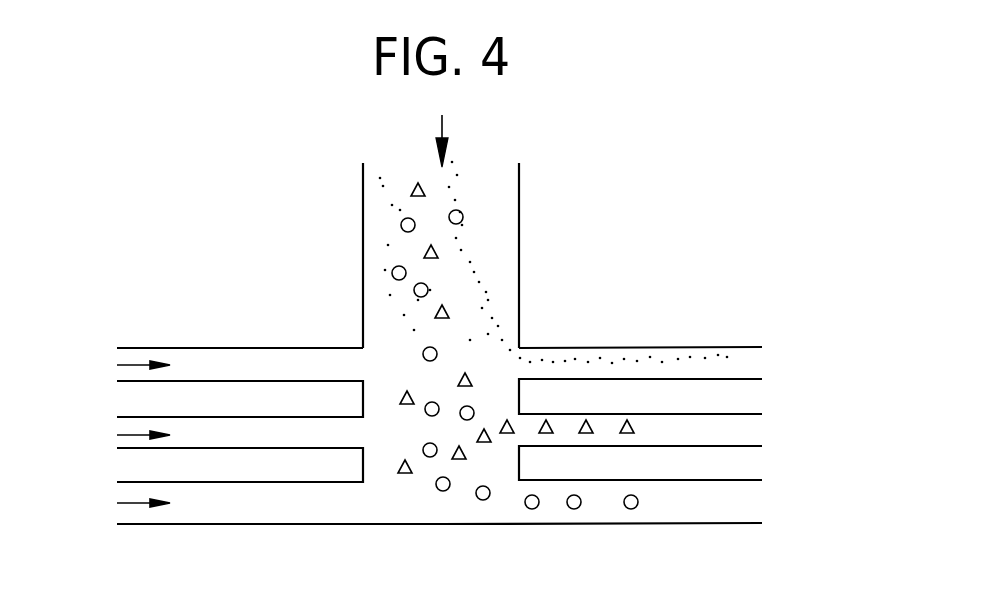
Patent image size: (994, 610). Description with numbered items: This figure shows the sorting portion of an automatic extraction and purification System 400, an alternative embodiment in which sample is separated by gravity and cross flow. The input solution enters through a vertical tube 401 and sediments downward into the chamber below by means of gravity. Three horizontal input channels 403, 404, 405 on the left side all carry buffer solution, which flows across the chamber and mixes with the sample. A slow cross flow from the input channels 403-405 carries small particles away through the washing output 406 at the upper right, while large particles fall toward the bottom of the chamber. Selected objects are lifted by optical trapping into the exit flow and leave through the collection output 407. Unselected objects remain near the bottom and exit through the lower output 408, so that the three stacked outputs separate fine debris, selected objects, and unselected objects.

The automatic extraction and purification System 400 is at (692, 198).
The tube 401 is at (519, 233).
The input channel 403 is at (183, 348).
The input channel 404 is at (172, 417).
The input channel 405 is at (170, 524).
The washing output 406 is at (670, 347).
The collection output 407 is at (670, 414).
The output 408 is at (645, 523).